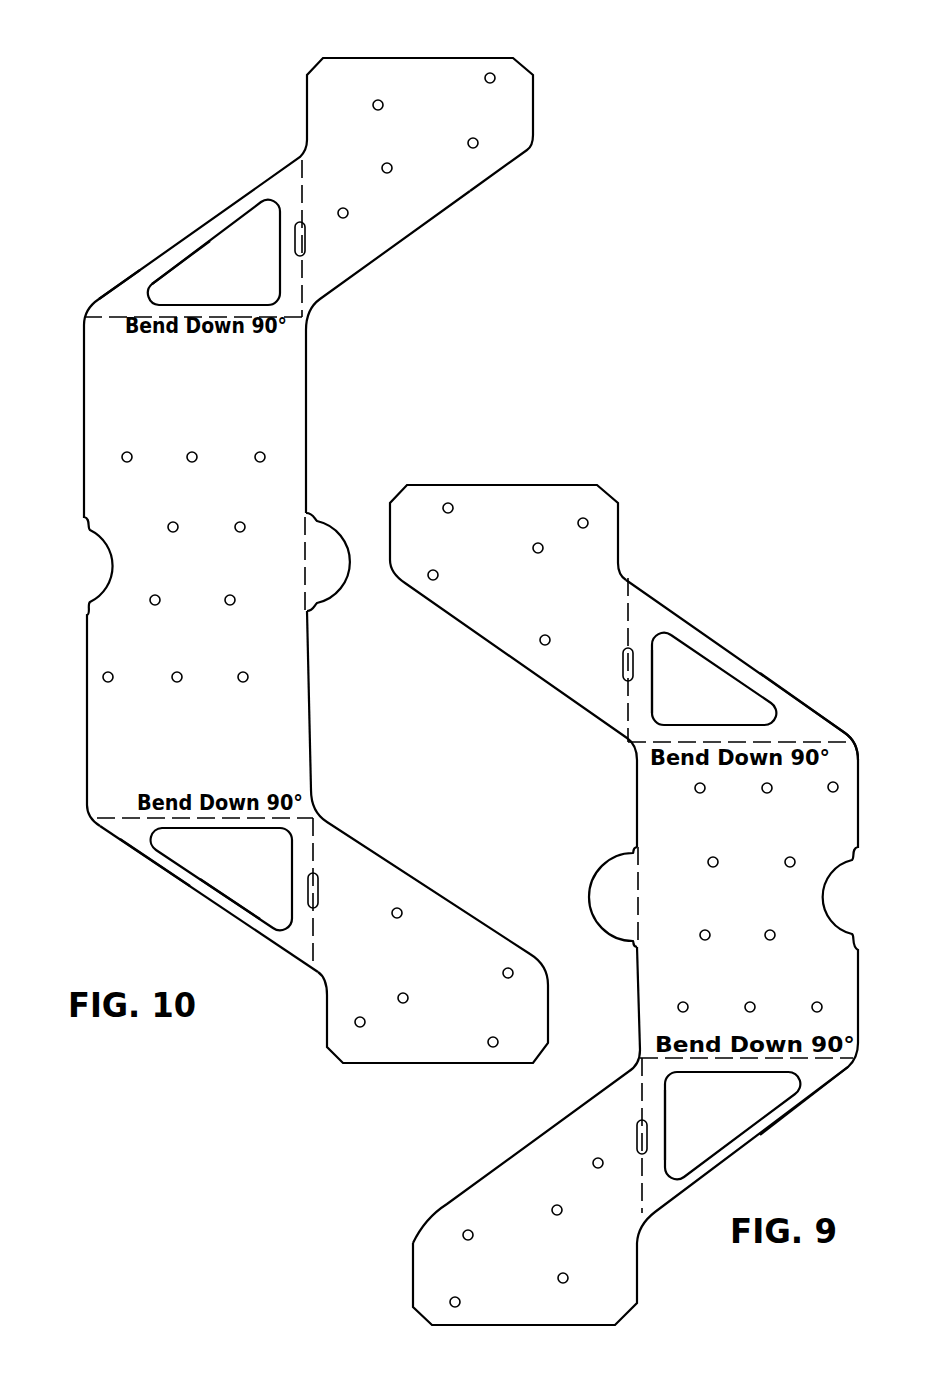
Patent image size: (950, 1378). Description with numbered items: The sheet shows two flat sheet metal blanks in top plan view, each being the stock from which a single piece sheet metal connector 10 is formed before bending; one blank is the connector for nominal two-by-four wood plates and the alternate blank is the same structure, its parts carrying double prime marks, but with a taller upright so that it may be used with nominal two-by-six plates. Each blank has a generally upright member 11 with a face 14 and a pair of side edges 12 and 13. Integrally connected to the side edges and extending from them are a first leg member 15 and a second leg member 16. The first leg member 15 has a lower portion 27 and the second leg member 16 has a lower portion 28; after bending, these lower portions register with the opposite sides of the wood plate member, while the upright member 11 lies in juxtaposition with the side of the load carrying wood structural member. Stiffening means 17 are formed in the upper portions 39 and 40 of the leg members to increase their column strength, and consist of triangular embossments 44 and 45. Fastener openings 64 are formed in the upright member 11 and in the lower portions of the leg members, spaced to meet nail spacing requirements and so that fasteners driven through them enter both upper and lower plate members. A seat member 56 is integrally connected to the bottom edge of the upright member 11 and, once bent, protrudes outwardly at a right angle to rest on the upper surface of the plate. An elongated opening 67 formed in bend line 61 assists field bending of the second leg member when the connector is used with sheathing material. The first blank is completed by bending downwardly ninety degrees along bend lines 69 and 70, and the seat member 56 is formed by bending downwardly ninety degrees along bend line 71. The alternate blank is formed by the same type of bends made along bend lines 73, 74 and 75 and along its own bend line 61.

In FIG. 10, the first single piece sheet metal connector 10 is at (209, 925).
In FIG. 9, the first single piece sheet metal connector 10 is at (742, 670).
In FIG. 10, the generally upright member 11 is at (179, 565).
In FIG. 9, the generally upright member 11 is at (764, 905).
In FIG. 10, the side edge 12 is at (177, 232).
In FIG. 9, the side edge 12 is at (753, 1143).
In FIG. 10, the side edge 13 is at (85, 850).
In FIG. 9, the side edge 13 is at (864, 727).
In FIG. 9, the face 14 is at (758, 897).
In FIG. 10, the first leg member 15 is at (436, 260).
In FIG. 9, the first leg member 15 is at (526, 1146).
In FIG. 10, the second leg member 16 is at (429, 887).
In FIG. 9, the second leg member 16 is at (513, 661).
In FIG. 10, the stiffening means 17 is at (196, 586).
In FIG. 9, the stiffening means 17 is at (726, 906).
In FIG. 10, the lower portion of the first leg member 27 is at (439, 138).
In FIG. 9, the lower portion of the first leg member 27 is at (497, 1241).
In FIG. 10, the lower portion of the second leg member 28 is at (433, 965).
In FIG. 9, the lower portion of the second leg member 28 is at (504, 577).
In FIG. 10, the upper portion of the first leg member 39 is at (96, 271).
In FIG. 9, the upper portion of the first leg member 39 is at (804, 1116).
In FIG. 10, the upper portion of the second leg member 40 is at (140, 890).
In FIG. 9, the upper portion of the second leg member 40 is at (809, 682).
In FIG. 10, the triangular embossment 44 is at (184, 222).
In FIG. 9, the triangular embossment 44 is at (692, 1125).
In FIG. 10, the triangular embossment 45 is at (218, 916).
In FIG. 9, the triangular embossment 45 is at (682, 681).
In FIG. 10, the seat member 56 is at (347, 538).
In FIG. 9, the seat member 56 is at (606, 885).
In FIG. 10, the bend line 61 is at (357, 238).
In FIG. 9, the bend line 61 is at (672, 643).
In FIG. 10, the fastener openings 64 is at (331, 560).
In FIG. 9, the fastener openings 64 is at (611, 905).
In FIG. 10, the elongated opening 67 is at (349, 565).
In FIG. 9, the elongated opening 67 is at (595, 901).
In FIG. 9, the bend line 69 is at (741, 707).
In FIG. 9, the bend line 70 is at (746, 1013).
In FIG. 9, the bend line 71 is at (657, 880).
In FIG. 10, the bend line 73 is at (205, 857).
In FIG. 10, the bend line 74 is at (193, 359).
In FIG. 10, the bend line 75 is at (271, 589).